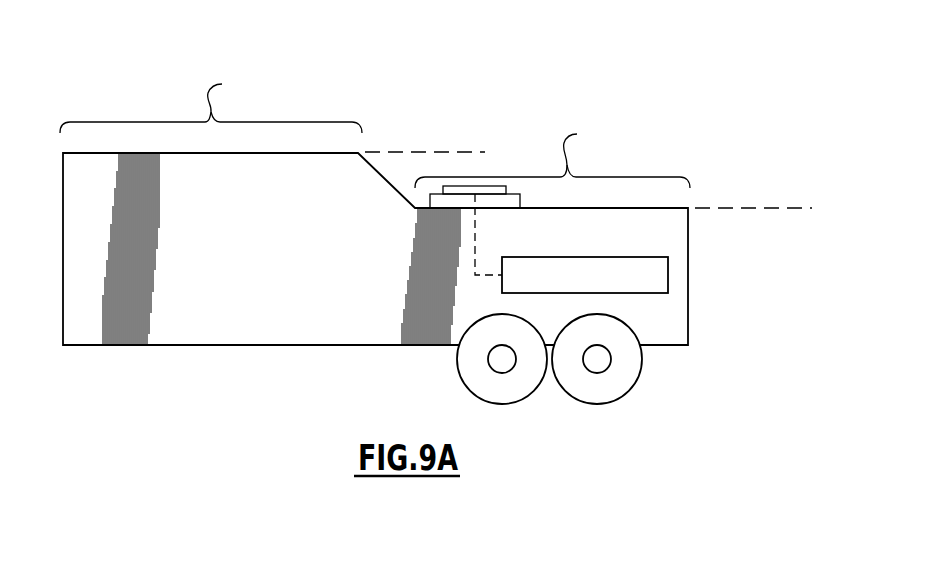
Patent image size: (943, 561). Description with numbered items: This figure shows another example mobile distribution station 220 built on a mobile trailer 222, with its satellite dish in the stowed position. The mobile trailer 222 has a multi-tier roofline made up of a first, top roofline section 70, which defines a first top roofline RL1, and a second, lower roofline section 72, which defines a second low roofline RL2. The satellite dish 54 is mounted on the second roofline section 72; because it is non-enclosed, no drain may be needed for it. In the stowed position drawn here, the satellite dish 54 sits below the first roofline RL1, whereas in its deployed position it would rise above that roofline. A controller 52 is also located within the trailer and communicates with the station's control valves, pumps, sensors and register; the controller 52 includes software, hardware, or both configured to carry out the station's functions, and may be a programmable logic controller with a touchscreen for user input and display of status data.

The mobile distribution station 220 is at (104, 66).
The first, top roofline section 70 is at (211, 102).
The second, lower roofline section 72 is at (552, 155).
The first top roofline RL1 is at (426, 151).
The second low roofline RL2 is at (756, 207).
The satellite dish 54 is at (490, 176).
The controller 52 is at (633, 293).
The mobile trailer 222 is at (173, 326).